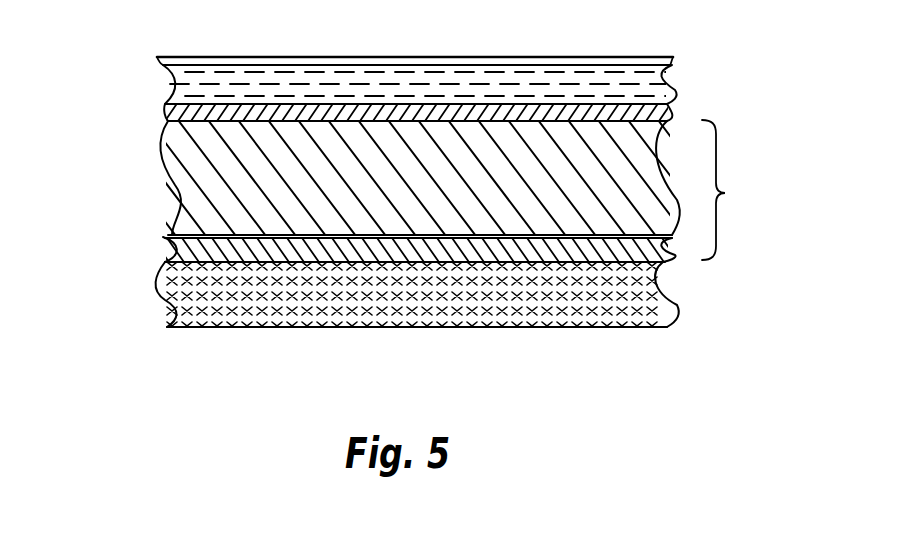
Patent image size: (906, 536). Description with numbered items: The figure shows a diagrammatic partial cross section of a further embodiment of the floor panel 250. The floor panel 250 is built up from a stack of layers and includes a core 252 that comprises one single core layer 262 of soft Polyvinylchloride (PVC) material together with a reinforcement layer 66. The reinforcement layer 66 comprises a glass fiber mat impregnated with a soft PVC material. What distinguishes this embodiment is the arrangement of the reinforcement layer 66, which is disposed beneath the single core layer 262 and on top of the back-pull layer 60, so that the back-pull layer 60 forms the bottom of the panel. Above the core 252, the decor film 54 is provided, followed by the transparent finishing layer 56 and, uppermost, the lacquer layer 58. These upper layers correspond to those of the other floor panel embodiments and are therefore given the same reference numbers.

The lacquer layer 58 is at (163, 62).
The transparent finishing layer 56 is at (165, 72).
The decor film 54 is at (163, 110).
The single core layer 262 is at (207, 163).
The reinforcement layer 66 is at (167, 250).
The back-pull layer 60 is at (177, 300).
The core 252 is at (744, 190).
The floor panel 250 is at (192, 357).